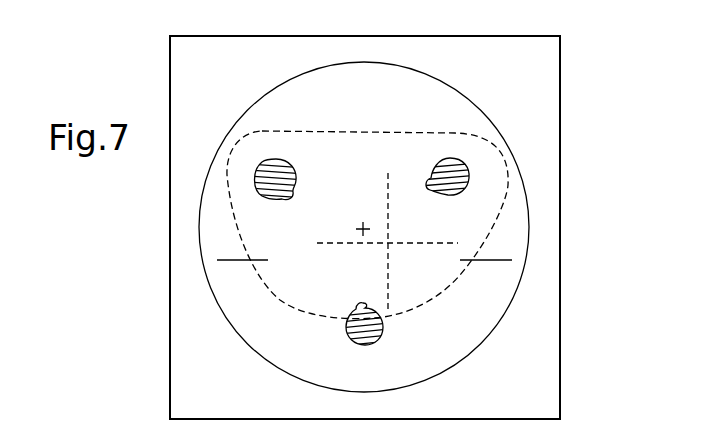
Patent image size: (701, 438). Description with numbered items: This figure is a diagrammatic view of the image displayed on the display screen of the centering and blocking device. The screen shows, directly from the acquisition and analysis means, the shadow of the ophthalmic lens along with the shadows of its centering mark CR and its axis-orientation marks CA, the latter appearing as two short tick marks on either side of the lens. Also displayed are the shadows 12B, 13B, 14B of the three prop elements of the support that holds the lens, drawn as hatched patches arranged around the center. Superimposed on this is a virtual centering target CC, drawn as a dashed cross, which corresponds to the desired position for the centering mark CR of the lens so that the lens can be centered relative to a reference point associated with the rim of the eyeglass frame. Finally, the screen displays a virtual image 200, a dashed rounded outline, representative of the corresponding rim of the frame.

The virtual image 200 is at (507, 197).
The virtual centering target CC is at (386, 192).
The centering mark CR is at (362, 231).
The shadow of prop element 12B is at (275, 173).
The shadow of prop element 13B is at (449, 173).
The shadow of prop element 14B is at (347, 325).
The axis-orientation marks CA is at (232, 262).